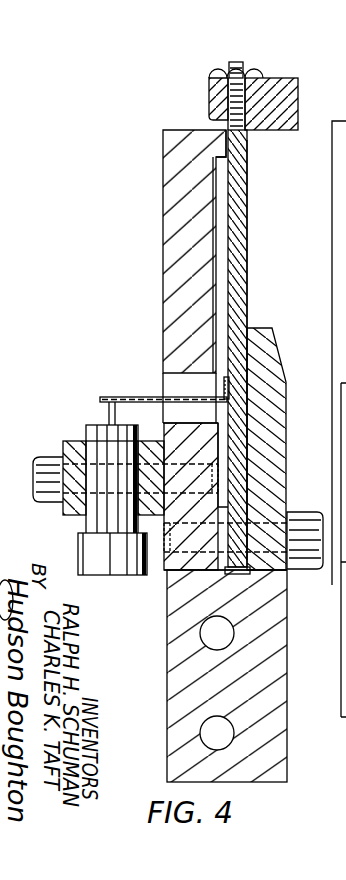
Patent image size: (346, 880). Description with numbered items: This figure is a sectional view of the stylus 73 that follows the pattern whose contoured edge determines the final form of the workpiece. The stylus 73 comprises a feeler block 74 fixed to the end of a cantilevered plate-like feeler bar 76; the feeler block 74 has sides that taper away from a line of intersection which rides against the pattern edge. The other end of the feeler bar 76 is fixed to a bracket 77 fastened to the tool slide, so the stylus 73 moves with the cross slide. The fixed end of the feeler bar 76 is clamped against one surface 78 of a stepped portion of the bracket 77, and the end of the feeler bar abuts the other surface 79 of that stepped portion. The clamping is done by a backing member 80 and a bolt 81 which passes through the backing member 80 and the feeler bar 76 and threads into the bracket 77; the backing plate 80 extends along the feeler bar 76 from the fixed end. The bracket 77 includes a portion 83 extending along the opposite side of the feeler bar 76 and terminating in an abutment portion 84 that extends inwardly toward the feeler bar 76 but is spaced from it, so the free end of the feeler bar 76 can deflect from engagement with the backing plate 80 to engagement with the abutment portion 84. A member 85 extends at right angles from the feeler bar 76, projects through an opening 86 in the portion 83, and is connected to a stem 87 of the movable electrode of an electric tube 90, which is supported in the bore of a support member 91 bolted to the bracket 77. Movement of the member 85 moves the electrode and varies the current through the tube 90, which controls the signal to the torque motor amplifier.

The stylus 73 is at (244, 237).
The feeler block 74 is at (298, 80).
The feeler bar 76 is at (247, 293).
The bracket 77 is at (283, 728).
The surface of stepped portion 78 is at (215, 565).
The other surface of stepped portion 79 is at (243, 573).
The backing member 80 is at (287, 463).
The bolt 81 is at (306, 514).
The portion of bracket 83 is at (173, 268).
The abutment portion 84 is at (228, 145).
The member 85 is at (160, 398).
The opening 86 is at (165, 374).
The stem 87 is at (109, 410).
The electric tube 90 is at (95, 521).
The support member 91 is at (63, 450).